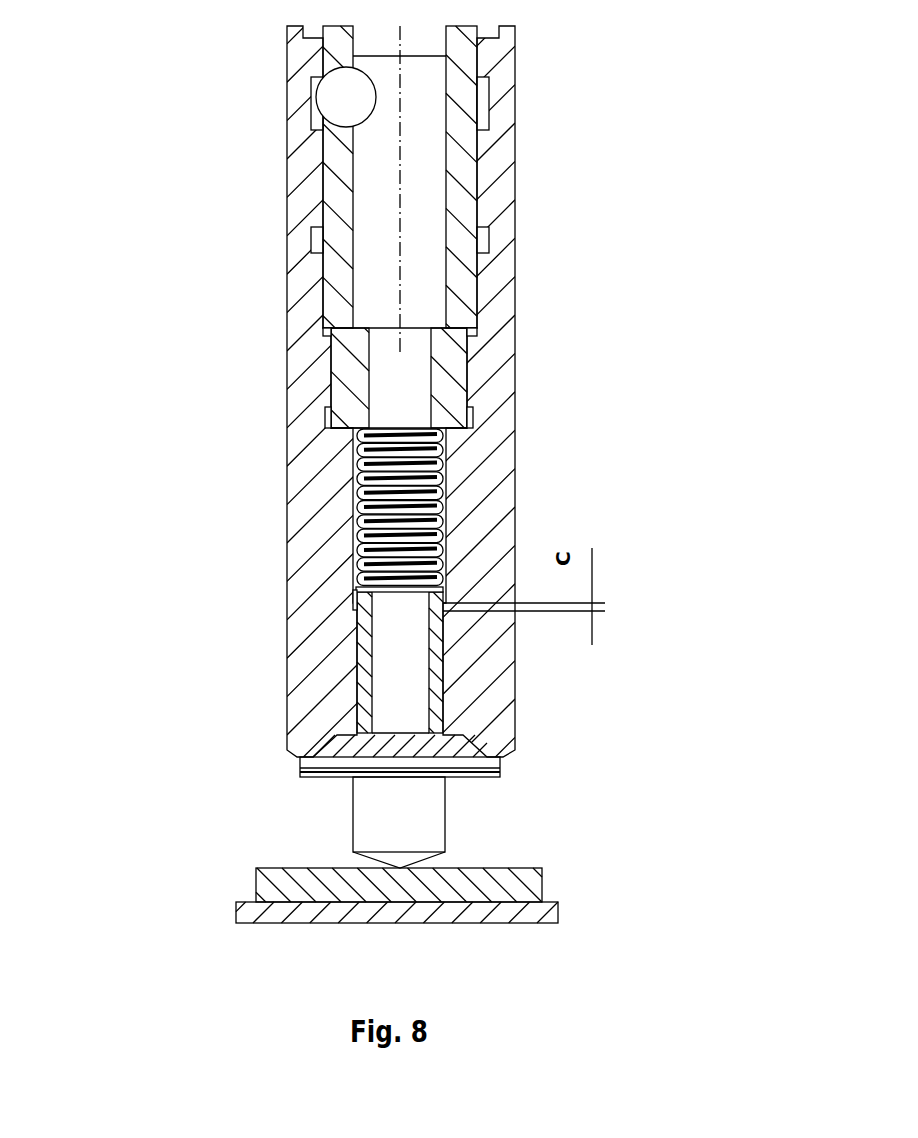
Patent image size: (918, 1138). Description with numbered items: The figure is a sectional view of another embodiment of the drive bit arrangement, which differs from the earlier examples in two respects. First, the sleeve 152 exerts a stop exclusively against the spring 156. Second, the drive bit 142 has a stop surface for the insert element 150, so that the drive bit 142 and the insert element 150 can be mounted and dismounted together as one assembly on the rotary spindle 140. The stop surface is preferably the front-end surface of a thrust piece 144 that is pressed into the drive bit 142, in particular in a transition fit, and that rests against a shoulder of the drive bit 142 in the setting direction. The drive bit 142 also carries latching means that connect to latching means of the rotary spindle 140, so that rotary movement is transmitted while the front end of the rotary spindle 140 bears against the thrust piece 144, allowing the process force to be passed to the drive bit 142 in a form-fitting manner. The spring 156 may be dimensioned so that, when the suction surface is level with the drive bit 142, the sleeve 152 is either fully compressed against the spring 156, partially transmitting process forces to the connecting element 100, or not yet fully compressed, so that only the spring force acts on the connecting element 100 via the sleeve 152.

The connecting element 100 is at (327, 757).
The rotary spindle 140 is at (345, 250).
The drive bit 142 is at (310, 512).
The thrust piece 144 is at (365, 368).
The insert element 150 is at (325, 580).
The sleeve 152 is at (360, 682).
The spring 156 is at (400, 500).